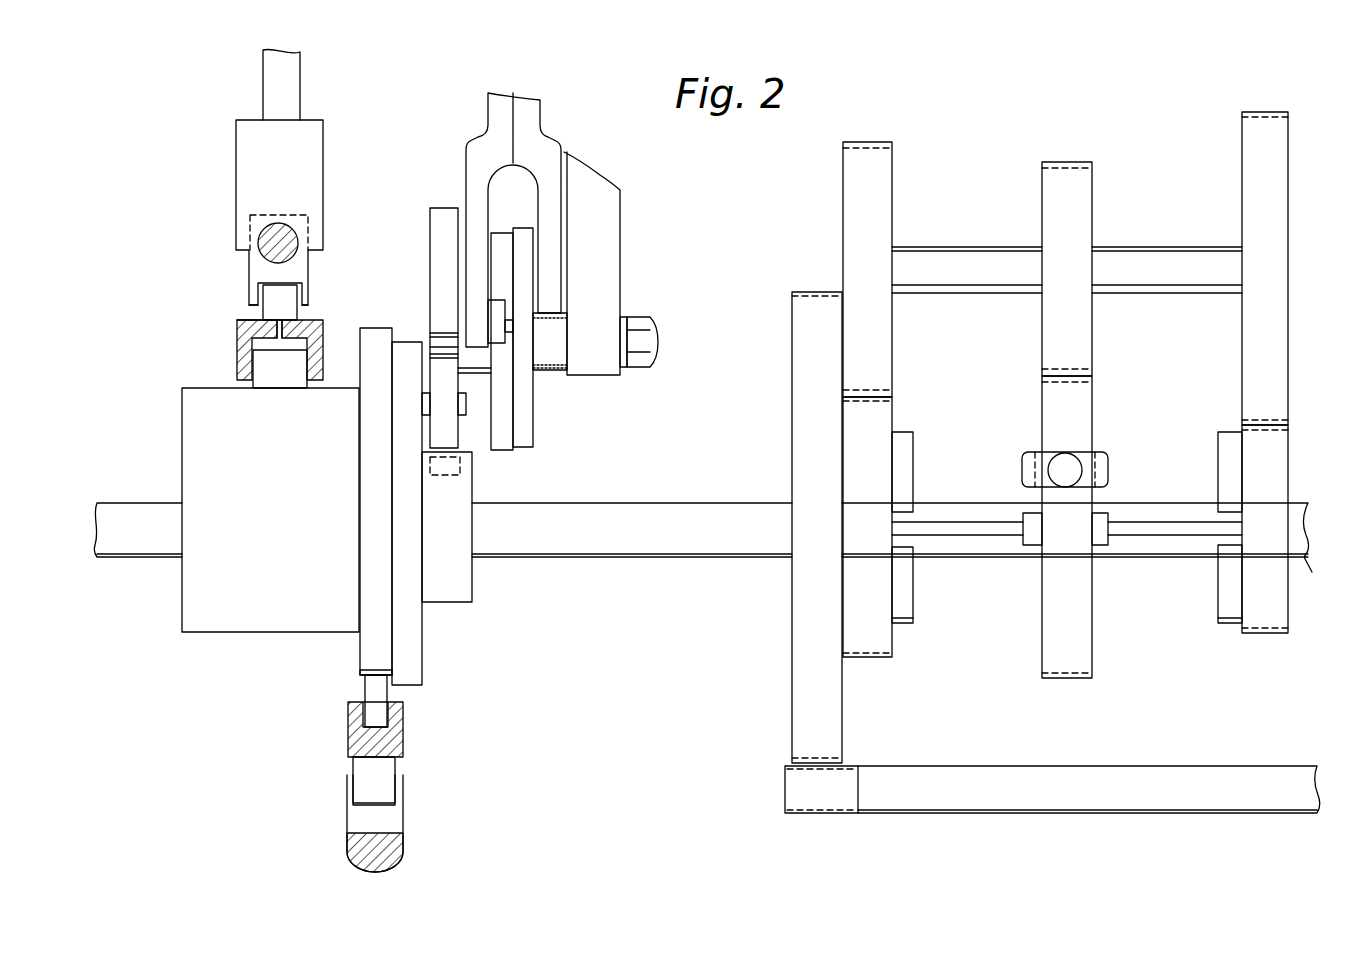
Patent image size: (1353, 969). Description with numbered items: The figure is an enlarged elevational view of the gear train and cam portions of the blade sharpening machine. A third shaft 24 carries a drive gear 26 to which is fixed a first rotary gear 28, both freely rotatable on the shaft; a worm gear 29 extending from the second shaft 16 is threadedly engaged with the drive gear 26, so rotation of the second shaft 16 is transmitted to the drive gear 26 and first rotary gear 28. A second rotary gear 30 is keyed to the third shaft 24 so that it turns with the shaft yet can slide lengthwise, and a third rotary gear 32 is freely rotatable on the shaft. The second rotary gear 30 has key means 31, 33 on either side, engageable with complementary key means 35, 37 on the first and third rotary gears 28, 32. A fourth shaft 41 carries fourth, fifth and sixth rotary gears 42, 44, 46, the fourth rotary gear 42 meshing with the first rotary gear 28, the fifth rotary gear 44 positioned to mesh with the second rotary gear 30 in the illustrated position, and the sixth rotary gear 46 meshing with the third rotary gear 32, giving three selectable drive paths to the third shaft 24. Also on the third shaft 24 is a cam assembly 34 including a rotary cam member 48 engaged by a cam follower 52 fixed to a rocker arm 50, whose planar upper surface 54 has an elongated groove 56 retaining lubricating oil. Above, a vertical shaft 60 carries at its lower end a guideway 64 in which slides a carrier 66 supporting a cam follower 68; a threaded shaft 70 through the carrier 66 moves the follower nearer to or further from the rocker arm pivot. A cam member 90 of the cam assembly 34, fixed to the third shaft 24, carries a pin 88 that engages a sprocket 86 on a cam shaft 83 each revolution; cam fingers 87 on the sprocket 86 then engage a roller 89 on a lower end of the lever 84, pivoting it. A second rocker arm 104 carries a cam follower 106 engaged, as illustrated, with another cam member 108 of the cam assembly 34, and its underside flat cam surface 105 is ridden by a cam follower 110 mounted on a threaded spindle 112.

The second shaft 16 is at (1082, 748).
The third shaft 24 is at (676, 484).
The drive gear 26 is at (792, 688).
The first rotary gear 28 is at (873, 645).
The worm gear 29 is at (813, 810).
The second rotary gear 30 is at (1080, 670).
The key means 31 is at (1030, 537).
The third rotary gear 32 is at (1270, 636).
The key means 33 is at (1100, 538).
The cam assembly 34 is at (164, 659).
The key means 35 is at (908, 622).
The key means 37 is at (1228, 628).
The fourth shaft 41 is at (975, 228).
The fourth rotary gear 42 is at (875, 144).
The fifth rotary gear 44 is at (1068, 164).
The sixth rotary gear 46 is at (1258, 114).
The rotary cam member 48 is at (276, 505).
The rocker arm 50 is at (237, 335).
The cam follower 52 is at (268, 370).
The upper surface 54 is at (250, 318).
The elongated groove 56 is at (275, 312).
The vertical shaft 60 is at (263, 84).
The guideway 64 is at (236, 170).
The carrier 66 is at (252, 268).
The cam follower 68 is at (272, 292).
The threaded shaft 70 is at (270, 238).
The cam shaft 83 is at (556, 372).
The lever 84 is at (530, 98).
The sprocket 86 is at (430, 240).
The cam fingers 87 is at (522, 260).
The pin 88 is at (466, 405).
The roller 89 is at (500, 398).
The cam member 90 is at (422, 680).
The second rocker arm 104 is at (352, 728).
The flat cam surface 105 is at (345, 765).
The cam follower 106 is at (370, 690).
The cam member 108 is at (372, 658).
The cam follower 110 is at (386, 772).
The threaded spindle 112 is at (382, 850).